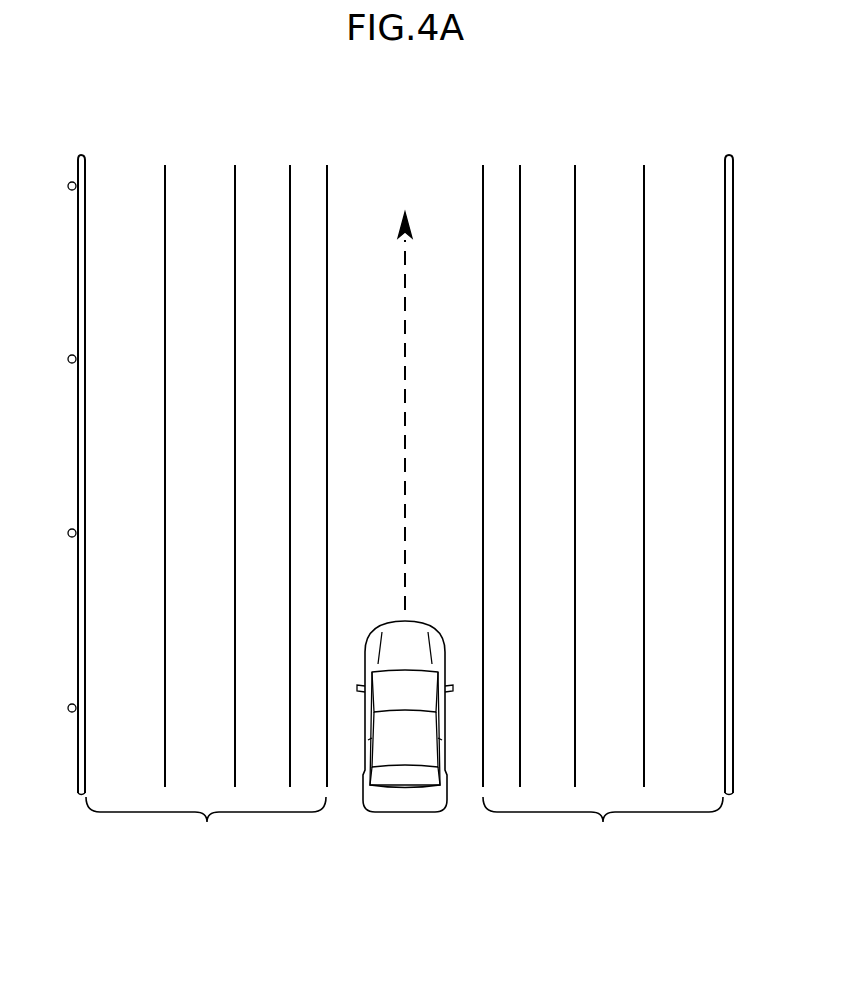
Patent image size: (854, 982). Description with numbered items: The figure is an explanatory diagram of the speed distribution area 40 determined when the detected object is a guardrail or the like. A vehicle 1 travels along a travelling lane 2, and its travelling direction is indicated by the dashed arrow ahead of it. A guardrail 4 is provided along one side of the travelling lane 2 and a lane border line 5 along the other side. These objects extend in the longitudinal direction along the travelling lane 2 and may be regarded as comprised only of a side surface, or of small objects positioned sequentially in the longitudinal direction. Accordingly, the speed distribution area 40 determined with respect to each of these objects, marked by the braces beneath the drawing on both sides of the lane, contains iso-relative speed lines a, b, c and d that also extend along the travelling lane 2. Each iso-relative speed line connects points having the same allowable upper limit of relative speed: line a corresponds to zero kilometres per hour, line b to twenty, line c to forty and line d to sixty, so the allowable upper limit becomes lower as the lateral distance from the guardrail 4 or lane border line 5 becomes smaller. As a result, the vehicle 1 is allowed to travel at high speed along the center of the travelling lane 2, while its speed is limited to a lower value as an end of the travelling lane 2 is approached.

The vehicle 1 is at (403, 812).
The travelling lane 2 is at (693, 218).
The guardrail 4 is at (78, 296).
The lane border line 5 is at (734, 375).
The speed distribution area 40 is at (404, 827).
The iso-relative speed line a is at (167, 168).
The iso-relative speed line b is at (237, 168).
The iso-relative speed line c is at (292, 168).
The iso-relative speed line d is at (329, 168).